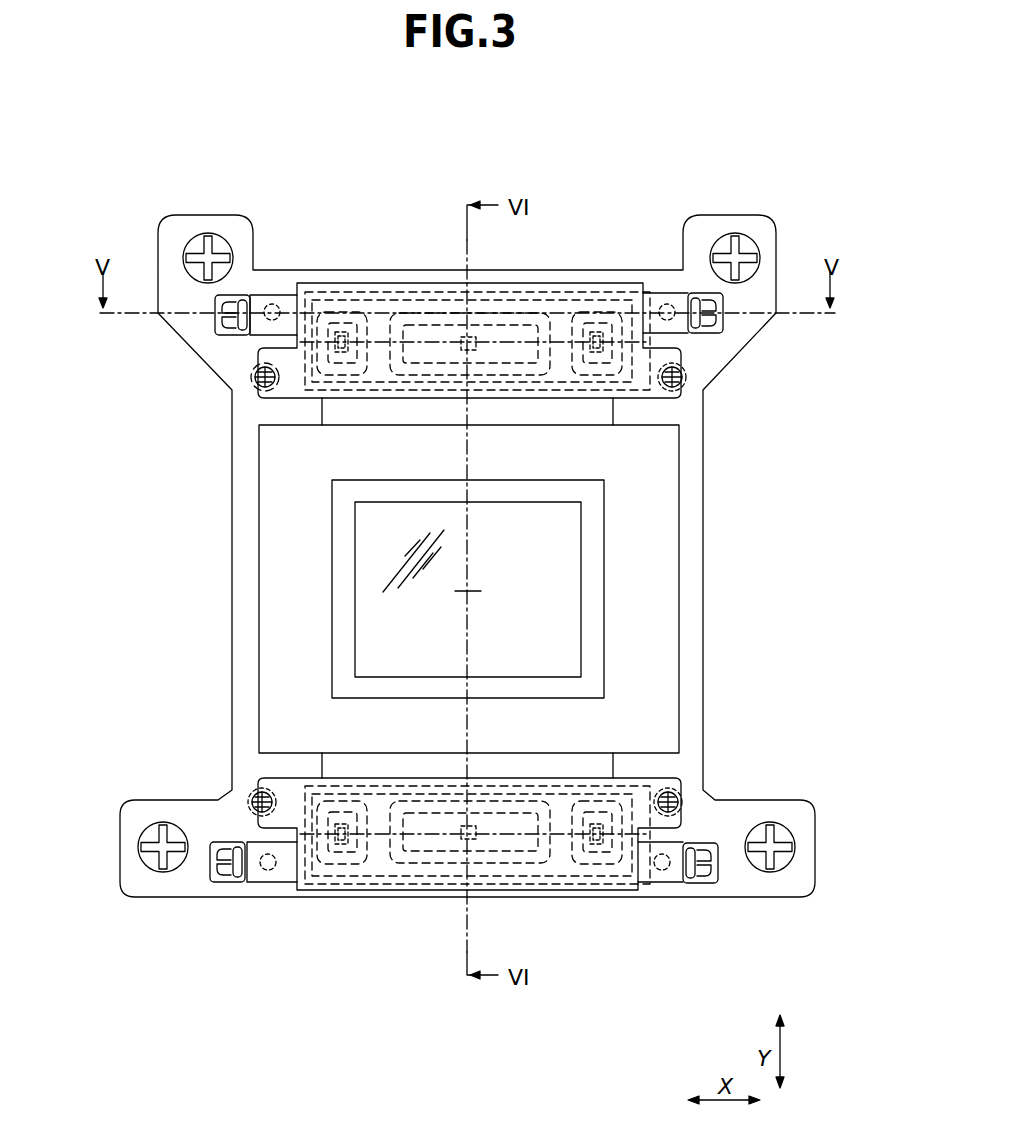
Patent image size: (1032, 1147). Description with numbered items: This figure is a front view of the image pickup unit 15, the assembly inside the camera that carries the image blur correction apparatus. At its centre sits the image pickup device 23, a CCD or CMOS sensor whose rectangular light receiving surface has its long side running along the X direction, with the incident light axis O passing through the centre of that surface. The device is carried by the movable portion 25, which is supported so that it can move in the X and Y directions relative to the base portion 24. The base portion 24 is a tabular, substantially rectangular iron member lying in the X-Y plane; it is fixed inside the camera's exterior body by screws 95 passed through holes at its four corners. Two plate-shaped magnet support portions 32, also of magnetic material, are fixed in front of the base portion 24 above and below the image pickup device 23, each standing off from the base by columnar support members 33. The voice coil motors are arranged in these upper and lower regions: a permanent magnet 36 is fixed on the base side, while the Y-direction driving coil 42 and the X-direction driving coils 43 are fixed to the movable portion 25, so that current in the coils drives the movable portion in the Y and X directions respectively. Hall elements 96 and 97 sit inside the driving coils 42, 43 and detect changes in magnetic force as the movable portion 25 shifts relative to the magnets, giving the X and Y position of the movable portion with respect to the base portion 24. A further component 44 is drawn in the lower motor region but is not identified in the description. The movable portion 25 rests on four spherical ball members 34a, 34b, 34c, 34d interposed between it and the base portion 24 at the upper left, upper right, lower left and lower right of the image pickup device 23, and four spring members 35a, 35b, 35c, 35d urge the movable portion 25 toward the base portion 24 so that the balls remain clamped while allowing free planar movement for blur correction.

The image pickup unit 15 is at (367, 171).
The image pickup device 23 is at (582, 542).
The base portion 24 is at (704, 605).
The movable portion 25 is at (680, 567).
The magnet support portion 32 is at (310, 400).
The columnar support member 33 is at (262, 392).
The ball member 34a is at (272, 304).
The ball member 34b is at (667, 304).
The ball member 34c is at (268, 870).
The ball member 34d is at (662, 870).
The spring member 35a is at (240, 335).
The spring member 35b is at (700, 333).
The spring member 35c is at (237, 882).
The spring member 35d is at (692, 883).
The permanent magnet 36 is at (565, 292).
The Y-direction driving coil 42 is at (445, 300).
The X-direction driving coil 43 is at (347, 318).
The lower magnet 44 is at (425, 876).
The screw 95 is at (190, 240).
The hall element 96 is at (470, 338).
The hall element 97 is at (342, 330).
The incident light axis O is at (468, 592).